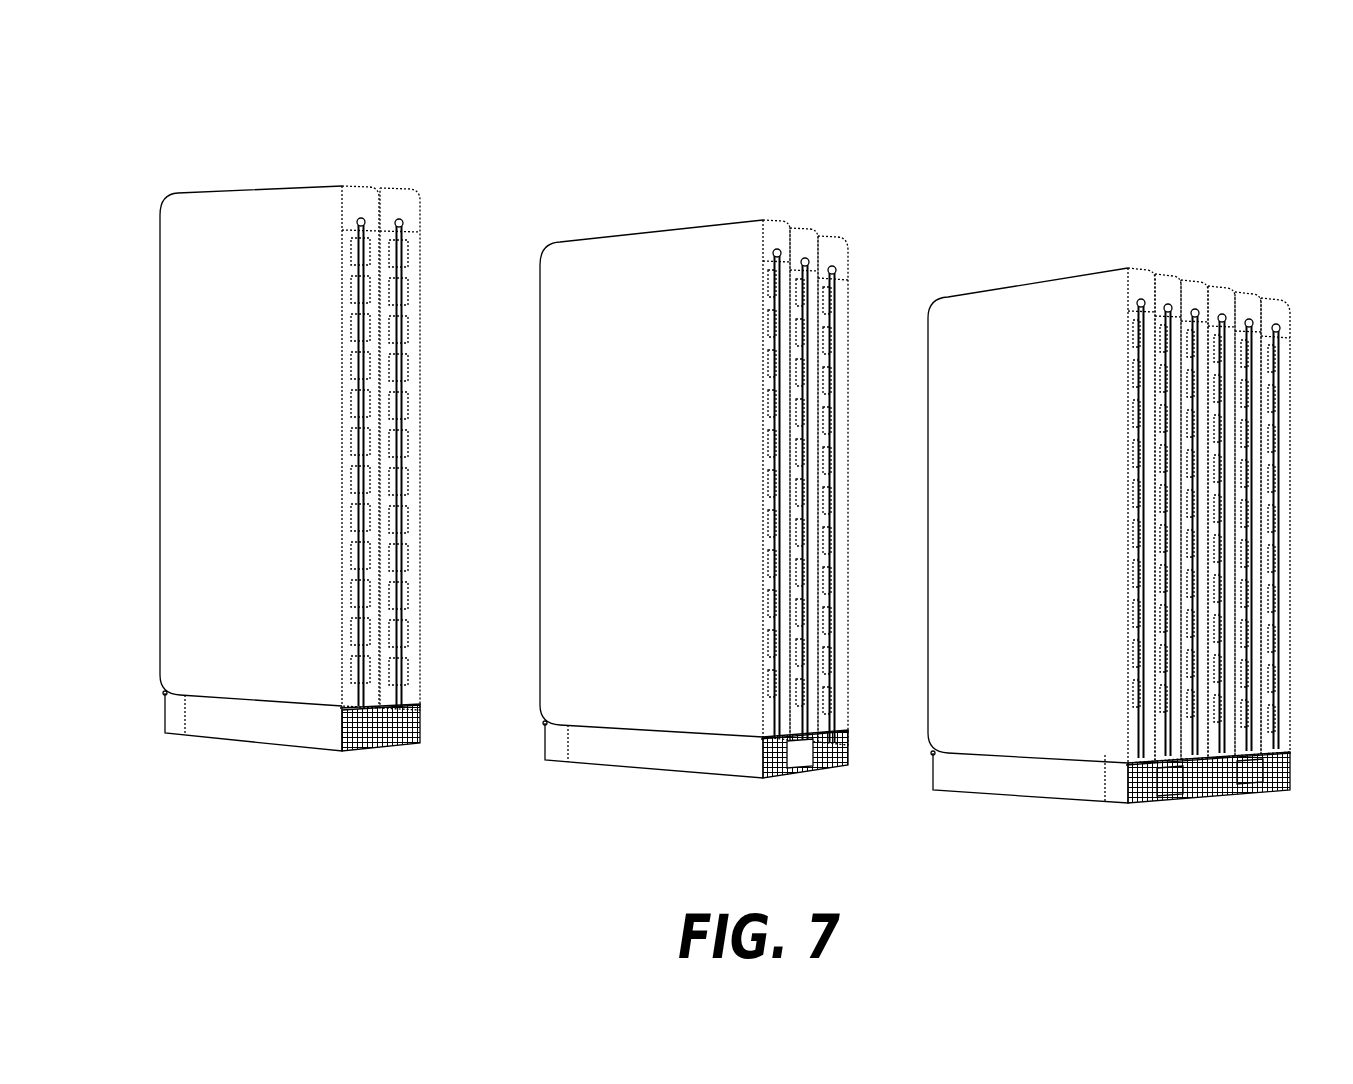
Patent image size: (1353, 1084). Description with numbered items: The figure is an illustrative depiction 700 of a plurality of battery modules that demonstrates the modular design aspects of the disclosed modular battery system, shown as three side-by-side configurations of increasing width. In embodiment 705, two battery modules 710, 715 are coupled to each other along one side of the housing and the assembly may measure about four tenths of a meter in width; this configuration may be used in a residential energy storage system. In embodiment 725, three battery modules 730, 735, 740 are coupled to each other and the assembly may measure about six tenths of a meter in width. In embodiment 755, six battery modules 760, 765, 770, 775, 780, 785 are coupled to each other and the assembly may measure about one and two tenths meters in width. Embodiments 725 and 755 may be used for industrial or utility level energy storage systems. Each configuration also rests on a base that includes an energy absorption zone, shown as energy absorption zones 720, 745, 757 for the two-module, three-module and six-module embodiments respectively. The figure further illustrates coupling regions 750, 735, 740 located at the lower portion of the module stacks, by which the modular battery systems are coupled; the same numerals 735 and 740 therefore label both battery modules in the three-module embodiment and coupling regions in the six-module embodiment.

The modular electronic device system 700 is at (131, 69).
The embodiment 705 is at (263, 644).
The battery module 710 is at (352, 188).
The battery module 715 is at (397, 191).
The energy absorption zone 720 is at (336, 736).
The embodiment 725 is at (676, 644).
The battery module 730 is at (766, 221).
The battery module 735 is at (803, 231).
The battery module 740 is at (826, 240).
The energy absorption zone 745 is at (744, 759).
The coupling region 750 is at (802, 772).
The embodiment 755 is at (1063, 644).
The energy absorption zone 757 is at (1112, 784).
The battery module 760 is at (1140, 275).
The battery module 765 is at (1168, 280).
The battery module 770 is at (1197, 285).
The battery module 775 is at (1222, 292).
The battery module 780 is at (1247, 295).
The battery module 785 is at (1275, 302).